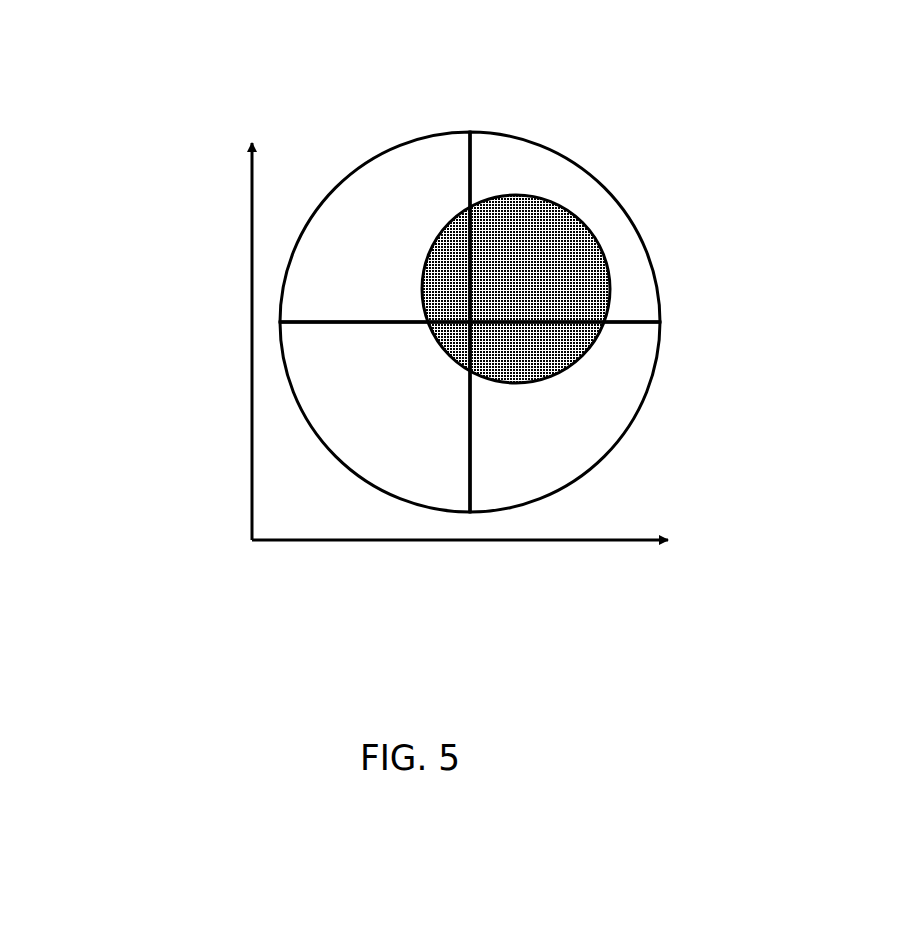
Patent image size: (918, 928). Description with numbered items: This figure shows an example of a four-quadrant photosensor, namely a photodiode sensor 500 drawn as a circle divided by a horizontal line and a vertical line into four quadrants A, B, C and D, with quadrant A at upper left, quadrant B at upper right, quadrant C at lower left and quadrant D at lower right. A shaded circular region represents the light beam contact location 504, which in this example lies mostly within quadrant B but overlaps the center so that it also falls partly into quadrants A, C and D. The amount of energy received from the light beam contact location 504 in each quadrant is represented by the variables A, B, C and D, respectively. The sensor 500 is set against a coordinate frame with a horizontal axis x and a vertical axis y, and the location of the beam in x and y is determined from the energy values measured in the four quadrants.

The photodiode sensor 500 is at (158, 105).
The light beam contact location 504 is at (596, 277).
The quadrant A is at (375, 227).
The quadrant B is at (565, 227).
The quadrant C is at (375, 417).
The quadrant D is at (565, 417).
The x coordinate x is at (477, 560).
The y coordinate y is at (234, 341).